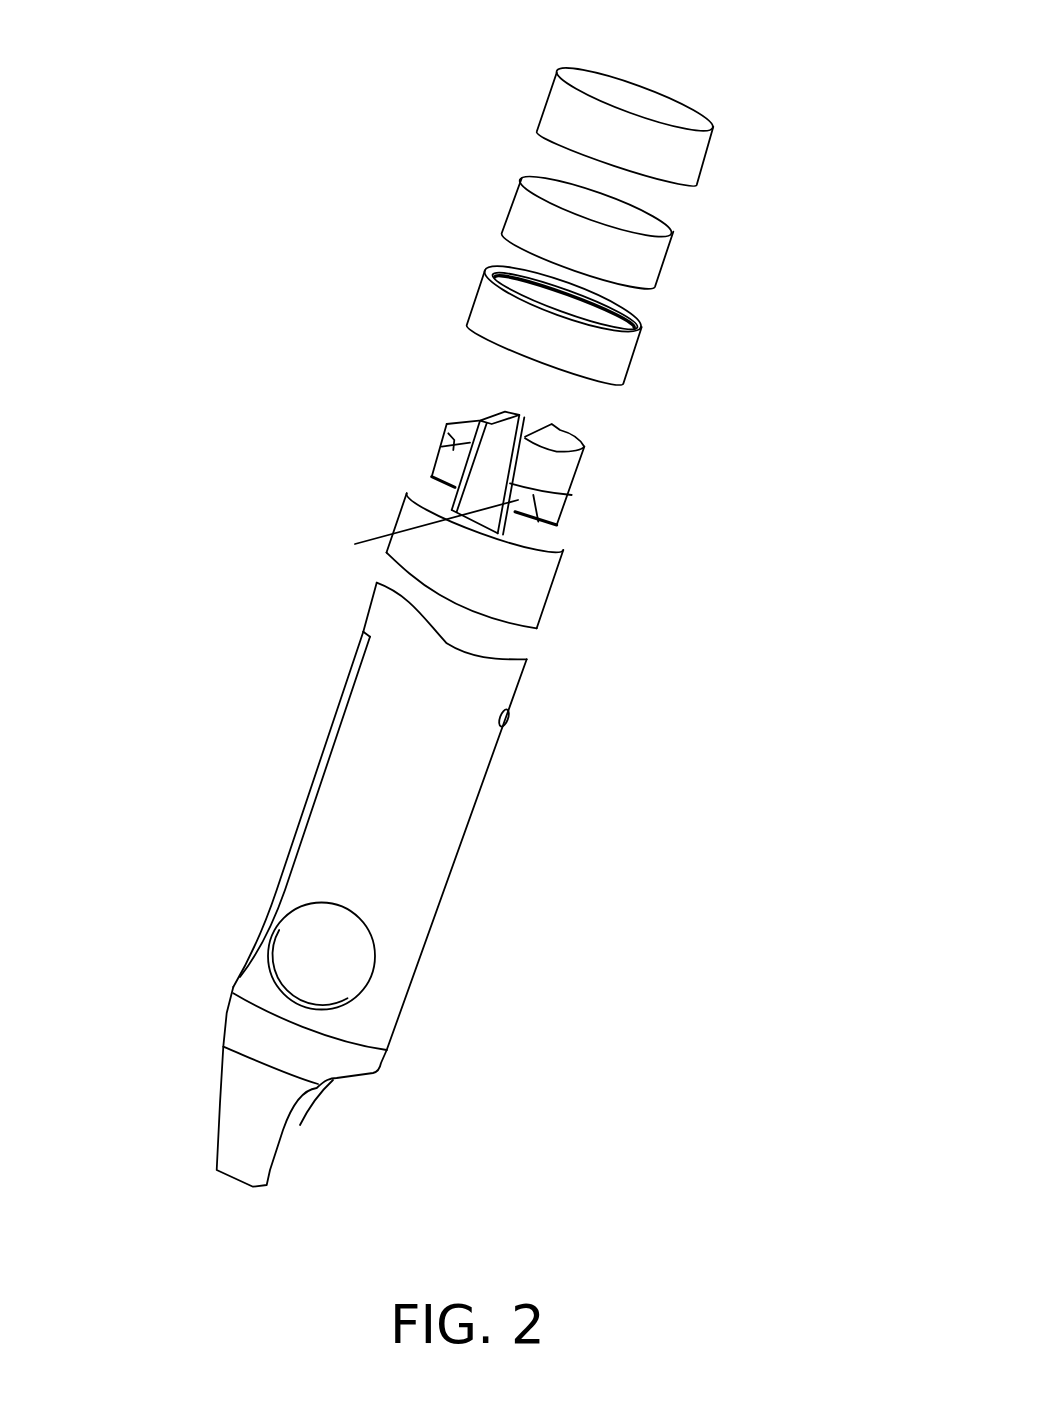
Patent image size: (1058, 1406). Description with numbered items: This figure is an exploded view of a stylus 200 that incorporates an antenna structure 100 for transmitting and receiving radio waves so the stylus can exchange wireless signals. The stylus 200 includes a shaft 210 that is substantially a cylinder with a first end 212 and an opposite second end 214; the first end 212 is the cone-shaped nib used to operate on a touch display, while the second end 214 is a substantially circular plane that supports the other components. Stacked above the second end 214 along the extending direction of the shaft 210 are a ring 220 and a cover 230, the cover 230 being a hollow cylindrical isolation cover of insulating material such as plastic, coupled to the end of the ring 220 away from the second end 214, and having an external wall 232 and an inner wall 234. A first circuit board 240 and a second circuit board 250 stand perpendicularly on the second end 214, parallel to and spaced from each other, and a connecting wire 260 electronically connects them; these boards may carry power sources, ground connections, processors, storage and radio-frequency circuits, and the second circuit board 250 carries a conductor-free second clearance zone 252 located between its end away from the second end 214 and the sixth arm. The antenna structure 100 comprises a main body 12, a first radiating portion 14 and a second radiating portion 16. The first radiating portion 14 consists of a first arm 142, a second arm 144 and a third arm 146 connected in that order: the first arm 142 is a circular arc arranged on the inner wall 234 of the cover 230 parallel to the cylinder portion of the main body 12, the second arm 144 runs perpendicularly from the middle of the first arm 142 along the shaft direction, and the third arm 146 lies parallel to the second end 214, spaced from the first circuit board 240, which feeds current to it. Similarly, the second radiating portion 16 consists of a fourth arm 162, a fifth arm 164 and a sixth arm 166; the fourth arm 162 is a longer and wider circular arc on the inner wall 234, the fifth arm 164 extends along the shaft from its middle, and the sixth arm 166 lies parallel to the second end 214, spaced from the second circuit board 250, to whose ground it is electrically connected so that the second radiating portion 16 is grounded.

The stylus 200 is at (398, 24).
The main body 12 is at (693, 145).
The cover 230 is at (565, 220).
The external wall 232 is at (515, 198).
The inner wall 234 is at (527, 250).
The ring 220 is at (623, 357).
The antenna structure 100 is at (564, 453).
The first circuit board 240 is at (507, 410).
The connecting wire 260 is at (492, 439).
The second circuit board 250 is at (556, 431).
The second clearance zone 252 is at (404, 532).
The first radiating portion 14 is at (387, 462).
The first arm 142 is at (447, 433).
The second arm 144 is at (435, 460).
The third arm 146 is at (450, 474).
The second radiating portion 16 is at (623, 502).
The fourth arm 162 is at (573, 460).
The fifth arm 164 is at (573, 497).
The sixth arm 166 is at (560, 516).
The shaft 210 is at (387, 839).
The first end 212 is at (240, 1108).
The second end 214 is at (540, 543).